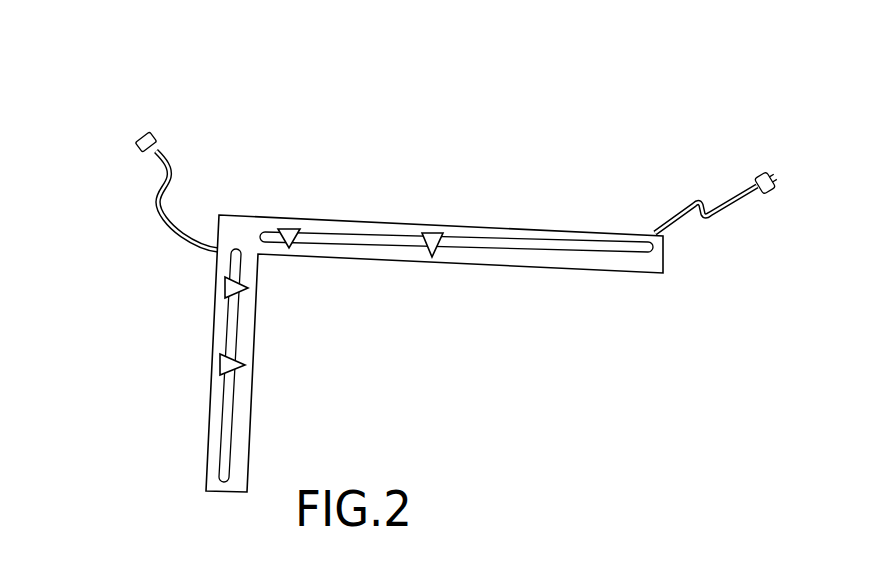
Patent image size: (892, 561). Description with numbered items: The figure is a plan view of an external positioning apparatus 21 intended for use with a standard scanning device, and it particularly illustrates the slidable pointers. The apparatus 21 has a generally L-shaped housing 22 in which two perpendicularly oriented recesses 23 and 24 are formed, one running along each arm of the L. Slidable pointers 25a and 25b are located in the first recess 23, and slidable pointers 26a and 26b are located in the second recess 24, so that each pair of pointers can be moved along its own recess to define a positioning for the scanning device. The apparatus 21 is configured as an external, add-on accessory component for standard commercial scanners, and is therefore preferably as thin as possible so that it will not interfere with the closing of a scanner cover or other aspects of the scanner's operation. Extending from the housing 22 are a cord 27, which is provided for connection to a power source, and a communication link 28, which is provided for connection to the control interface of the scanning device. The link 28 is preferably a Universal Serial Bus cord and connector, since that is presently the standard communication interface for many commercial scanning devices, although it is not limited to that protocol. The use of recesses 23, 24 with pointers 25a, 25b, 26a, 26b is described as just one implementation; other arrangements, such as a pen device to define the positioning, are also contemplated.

The external positioning apparatus 21 is at (94, 120).
The L-shaped housing 22 is at (407, 263).
The recess 23 is at (583, 242).
The recess 24 is at (222, 439).
The slidable pointer 25a is at (289, 228).
The slidable pointer 25b is at (432, 233).
The slidable pointer 26a is at (220, 363).
The slidable pointer 26b is at (225, 292).
The cord 27 is at (687, 197).
The communication link 28 is at (160, 140).